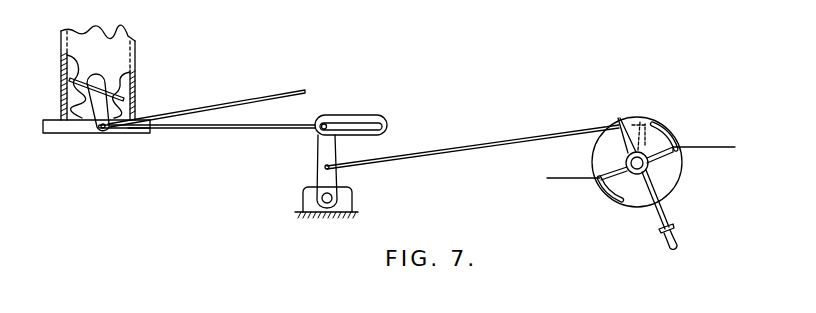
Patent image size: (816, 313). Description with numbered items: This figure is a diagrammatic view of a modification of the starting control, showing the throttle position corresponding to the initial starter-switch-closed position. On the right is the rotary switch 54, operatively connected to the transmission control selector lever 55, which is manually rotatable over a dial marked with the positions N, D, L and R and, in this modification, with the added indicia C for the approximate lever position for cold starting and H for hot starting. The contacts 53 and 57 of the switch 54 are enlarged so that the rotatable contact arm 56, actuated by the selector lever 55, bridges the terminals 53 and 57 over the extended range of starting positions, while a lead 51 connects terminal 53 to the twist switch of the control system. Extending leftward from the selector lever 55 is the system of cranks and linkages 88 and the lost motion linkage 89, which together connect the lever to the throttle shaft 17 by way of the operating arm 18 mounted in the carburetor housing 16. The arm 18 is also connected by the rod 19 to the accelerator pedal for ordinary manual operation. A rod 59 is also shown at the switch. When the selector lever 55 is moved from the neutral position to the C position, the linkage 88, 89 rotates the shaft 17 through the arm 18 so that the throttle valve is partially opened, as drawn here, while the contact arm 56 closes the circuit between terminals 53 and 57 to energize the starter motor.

The housing wall 16 is at (130, 90).
The shaft 17 is at (100, 81).
The operating arm 18 is at (94, 110).
The rod 19 is at (263, 97).
The lost motion linkage 89 is at (268, 128).
The system of cranks and linkages 88 is at (468, 147).
The switch 54 is at (670, 188).
The rotatable contact arm 56 is at (663, 160).
The terminal 53 is at (655, 127).
The terminal 57 is at (610, 192).
The transmission control selector lever 55 is at (674, 231).
The rod 59 is at (551, 178).
The lead 51 is at (720, 147).